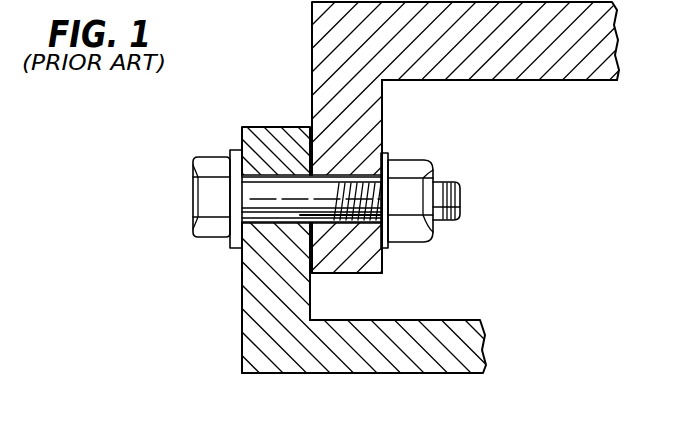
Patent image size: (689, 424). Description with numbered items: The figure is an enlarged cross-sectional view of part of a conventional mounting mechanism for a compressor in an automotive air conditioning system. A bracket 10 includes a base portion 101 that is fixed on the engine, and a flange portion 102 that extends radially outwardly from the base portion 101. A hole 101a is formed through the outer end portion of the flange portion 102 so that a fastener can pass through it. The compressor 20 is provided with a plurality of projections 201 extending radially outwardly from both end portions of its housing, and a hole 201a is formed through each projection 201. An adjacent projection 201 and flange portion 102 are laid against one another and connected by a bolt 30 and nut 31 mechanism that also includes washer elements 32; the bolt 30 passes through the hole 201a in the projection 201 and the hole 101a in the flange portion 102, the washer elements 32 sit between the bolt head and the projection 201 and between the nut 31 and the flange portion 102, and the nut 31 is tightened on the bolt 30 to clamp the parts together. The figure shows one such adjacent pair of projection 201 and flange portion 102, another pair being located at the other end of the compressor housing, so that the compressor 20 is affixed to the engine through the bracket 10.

The bracket 10 is at (571, 62).
The base portion 101 is at (541, 82).
The flange portion 102 is at (350, 124).
The bolt hole in projecting portion 101a is at (352, 168).
The compressor 20 is at (415, 332).
The projection 201 is at (276, 265).
The hole 201a is at (270, 170).
The bolt 30 is at (200, 198).
The nut 31 is at (423, 198).
The washer element 32 is at (234, 248).